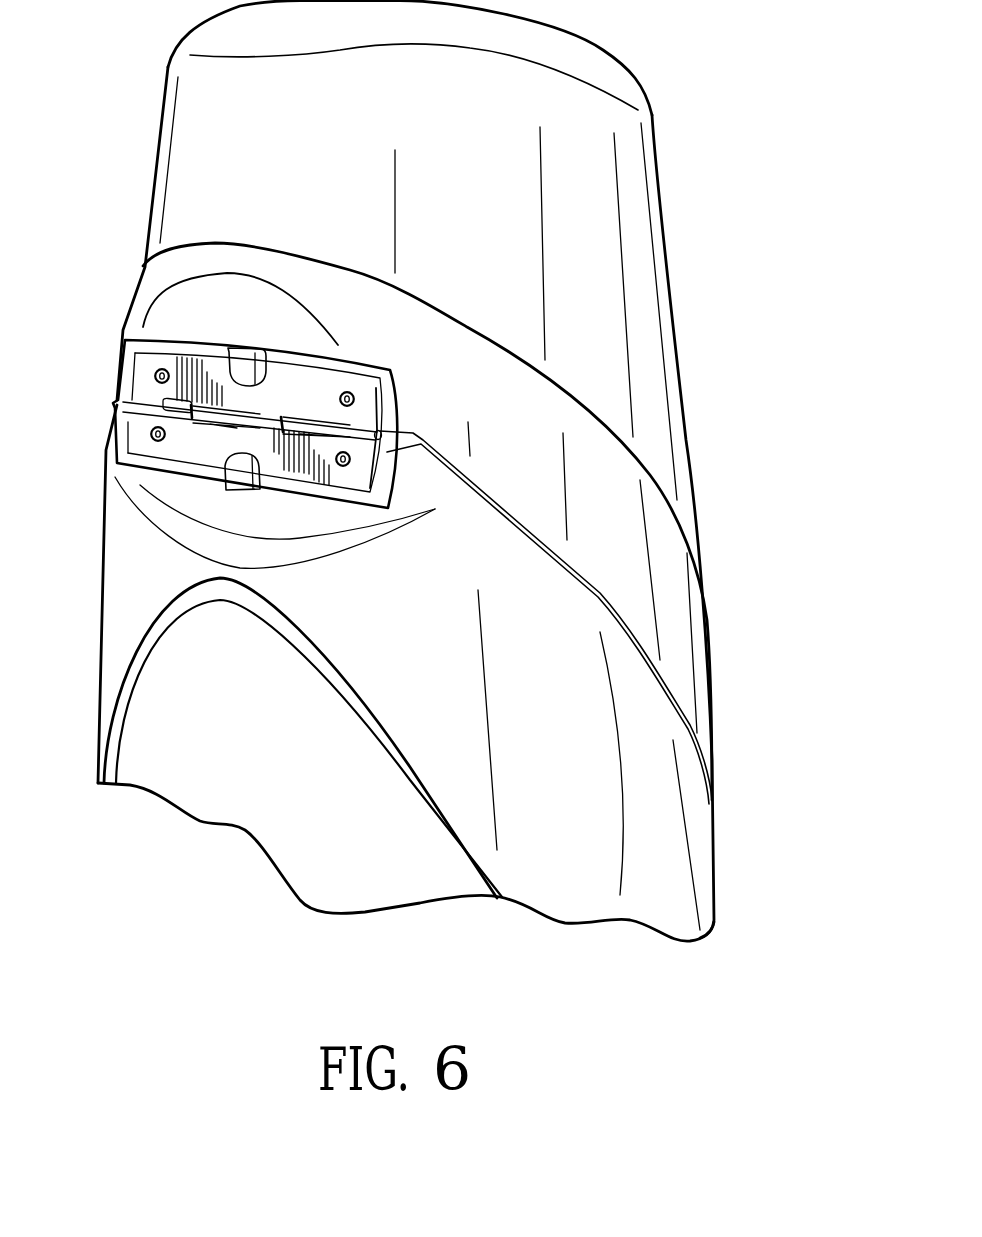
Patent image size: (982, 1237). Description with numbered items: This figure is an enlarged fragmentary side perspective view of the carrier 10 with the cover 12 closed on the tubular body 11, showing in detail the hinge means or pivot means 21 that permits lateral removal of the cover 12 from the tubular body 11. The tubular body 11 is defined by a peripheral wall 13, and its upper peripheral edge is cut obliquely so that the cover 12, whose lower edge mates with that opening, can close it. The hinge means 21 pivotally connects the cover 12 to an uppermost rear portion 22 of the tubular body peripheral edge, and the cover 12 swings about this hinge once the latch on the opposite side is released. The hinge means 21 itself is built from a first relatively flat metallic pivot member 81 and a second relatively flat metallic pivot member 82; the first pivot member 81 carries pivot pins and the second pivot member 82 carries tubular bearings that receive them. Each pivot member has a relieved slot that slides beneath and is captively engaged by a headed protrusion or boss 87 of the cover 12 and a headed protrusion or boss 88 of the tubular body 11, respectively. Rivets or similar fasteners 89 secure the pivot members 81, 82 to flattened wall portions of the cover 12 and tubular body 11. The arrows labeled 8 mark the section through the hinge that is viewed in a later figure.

The carrier 10 is at (720, 350).
The tubular body 11 is at (658, 847).
The cover 12 is at (667, 227).
The peripheral wall 13 is at (335, 798).
The hinge means or pivot means 21 is at (403, 407).
The uppermost rear portion 22 is at (350, 618).
The first pivot member 81 is at (338, 347).
The second pivot member 82 is at (363, 468).
The headed protrusion or boss 87 is at (320, 387).
The headed protrusion or boss 88 is at (235, 478).
The rivets or fasteners 89 is at (155, 376).
The section line for FIG. 8 is at (198, 302).